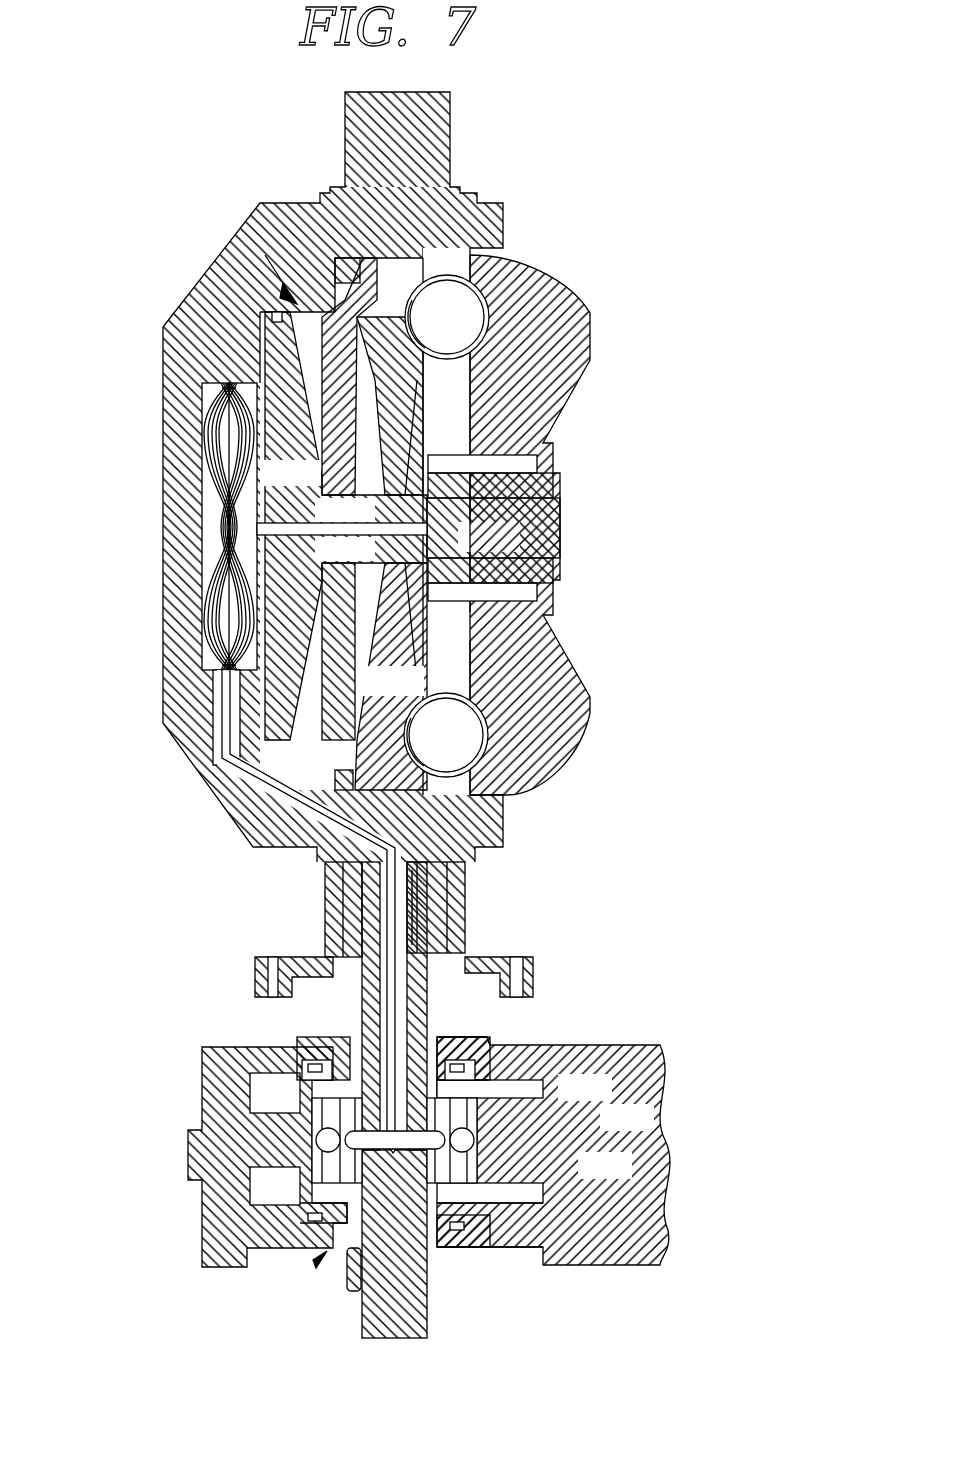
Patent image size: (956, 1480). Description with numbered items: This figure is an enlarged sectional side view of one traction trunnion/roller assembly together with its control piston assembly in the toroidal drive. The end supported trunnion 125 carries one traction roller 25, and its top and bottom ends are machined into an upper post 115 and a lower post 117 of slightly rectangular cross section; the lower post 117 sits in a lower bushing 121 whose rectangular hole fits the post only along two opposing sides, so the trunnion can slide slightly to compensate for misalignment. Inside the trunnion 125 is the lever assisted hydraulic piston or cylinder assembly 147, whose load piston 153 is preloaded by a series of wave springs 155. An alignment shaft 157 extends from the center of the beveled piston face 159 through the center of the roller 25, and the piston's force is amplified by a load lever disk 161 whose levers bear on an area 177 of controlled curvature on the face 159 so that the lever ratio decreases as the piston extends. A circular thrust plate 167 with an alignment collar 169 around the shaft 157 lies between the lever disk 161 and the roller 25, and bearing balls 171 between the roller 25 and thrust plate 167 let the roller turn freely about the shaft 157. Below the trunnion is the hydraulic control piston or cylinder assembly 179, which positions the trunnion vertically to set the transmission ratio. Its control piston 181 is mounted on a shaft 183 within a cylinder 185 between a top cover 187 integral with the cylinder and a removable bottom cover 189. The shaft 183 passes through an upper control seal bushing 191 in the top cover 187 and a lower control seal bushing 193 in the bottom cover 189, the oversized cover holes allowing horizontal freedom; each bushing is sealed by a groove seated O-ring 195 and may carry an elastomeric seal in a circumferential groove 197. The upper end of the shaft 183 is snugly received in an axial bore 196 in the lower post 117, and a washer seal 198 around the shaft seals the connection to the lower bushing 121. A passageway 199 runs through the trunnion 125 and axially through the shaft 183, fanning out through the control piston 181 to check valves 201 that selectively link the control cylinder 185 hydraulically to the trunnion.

The traction roller 25 is at (563, 720).
The upper post 115 is at (420, 130).
The lower post 117 is at (432, 888).
The lower bushing 121 is at (327, 895).
The trunnion 125 is at (183, 745).
The hydraulic piston or cylinder assembly 147 is at (265, 255).
The load piston 153 is at (327, 497).
The wave springs 155 is at (213, 580).
The alignment shaft 157 is at (505, 551).
The face 159 is at (300, 643).
The load lever disk 161 is at (395, 652).
The thrust plate 167 is at (405, 696).
The alignment collar 169 is at (540, 487).
The bearing balls 171 is at (462, 751).
The area of controlled curvature 177 is at (330, 500).
The hydraulic control piston or cylinder assembly 179 is at (318, 1262).
The control piston 181 is at (505, 1117).
The shaft 183 is at (400, 1320).
The cylinder 185 is at (215, 1057).
The top cover 187 is at (500, 1050).
The bottom cover 189 is at (505, 1250).
The upper control seal bushing 191 is at (480, 965).
The lower control seal bushing 193 is at (352, 1290).
The O-ring 195 is at (490, 1076).
The axial bore 196 is at (422, 927).
The circumferential groove 197 is at (340, 1050).
The washer seal 198 is at (343, 925).
The passageway 199 is at (291, 790).
The check valve 201 is at (328, 1140).